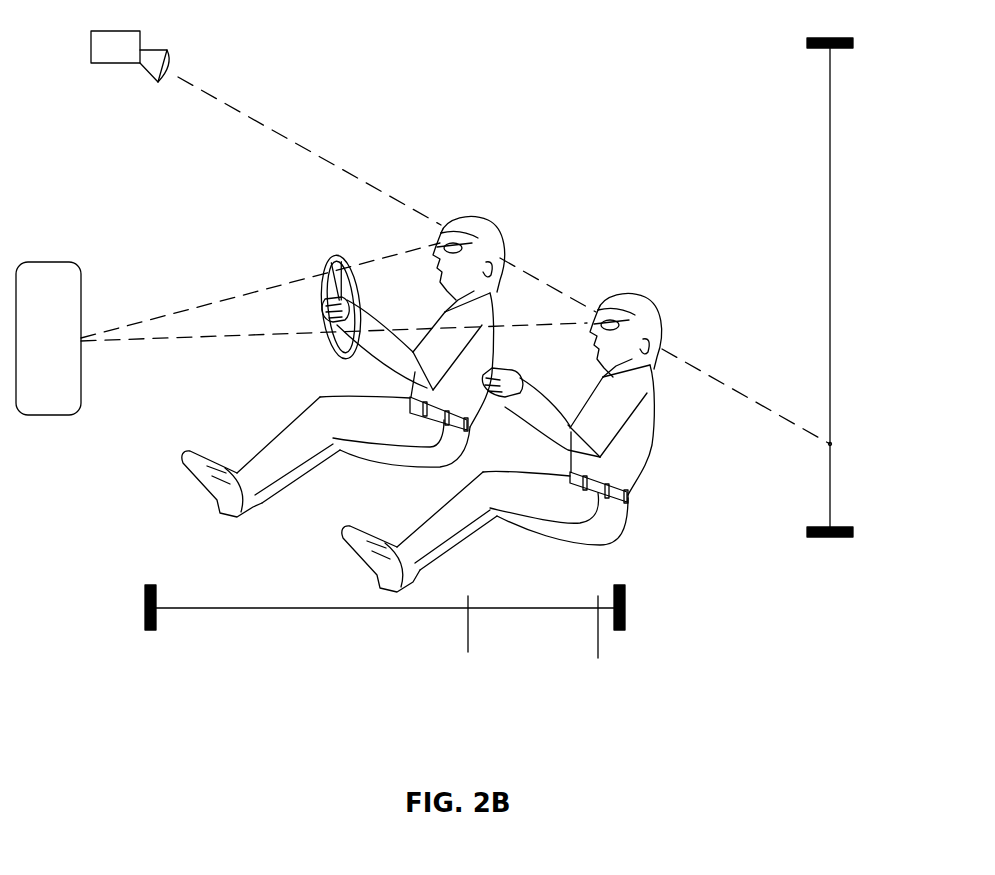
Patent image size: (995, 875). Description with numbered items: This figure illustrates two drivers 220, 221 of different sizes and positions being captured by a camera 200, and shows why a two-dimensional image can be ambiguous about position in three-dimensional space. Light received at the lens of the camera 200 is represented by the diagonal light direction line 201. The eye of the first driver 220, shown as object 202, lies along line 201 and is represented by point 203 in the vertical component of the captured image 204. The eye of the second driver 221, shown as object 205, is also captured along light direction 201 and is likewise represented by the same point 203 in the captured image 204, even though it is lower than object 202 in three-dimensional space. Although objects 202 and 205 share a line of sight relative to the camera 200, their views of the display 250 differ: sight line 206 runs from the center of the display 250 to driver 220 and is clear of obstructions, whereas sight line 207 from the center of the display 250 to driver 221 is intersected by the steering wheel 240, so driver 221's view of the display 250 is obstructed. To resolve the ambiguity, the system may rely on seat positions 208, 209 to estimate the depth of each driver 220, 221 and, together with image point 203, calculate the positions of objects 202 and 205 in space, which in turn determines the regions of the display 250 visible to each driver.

The camera 200 is at (104, 64).
The light direction line 201 is at (331, 160).
The object (eye of driver) 202 is at (486, 220).
The point 203 is at (830, 444).
The captured image 204 is at (830, 152).
The object (eye of second driver) 205 is at (648, 290).
The sight line 206 is at (290, 281).
The sight line 207 is at (230, 336).
The seat position 208 is at (466, 630).
The seat position 209 is at (596, 635).
The driver 220 is at (275, 490).
The driver 221 is at (630, 533).
The steering wheel 240 is at (320, 337).
The display 250 is at (48, 416).